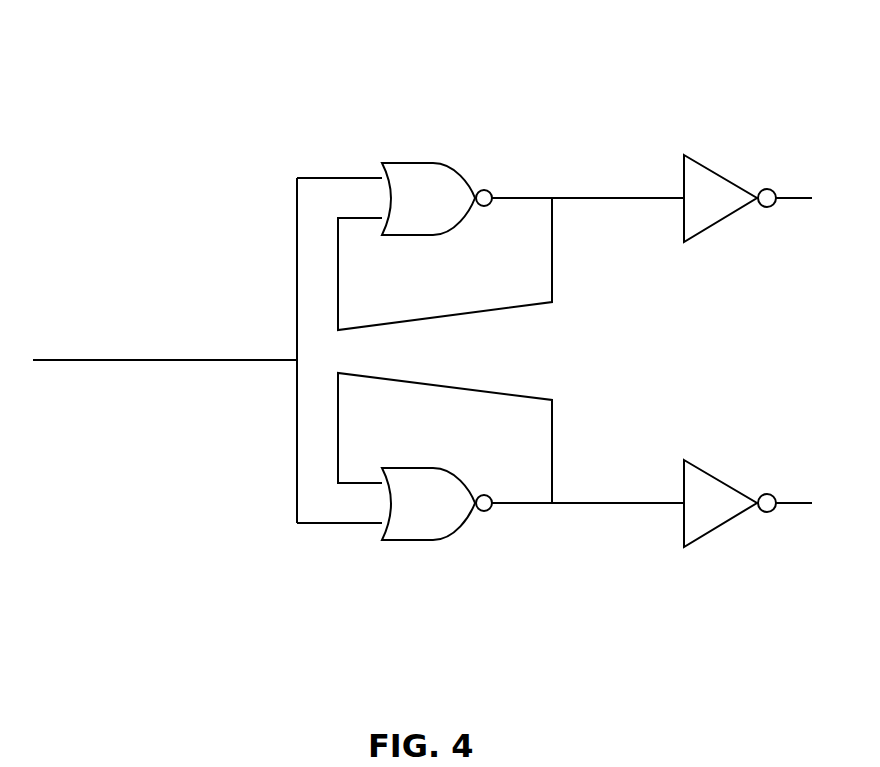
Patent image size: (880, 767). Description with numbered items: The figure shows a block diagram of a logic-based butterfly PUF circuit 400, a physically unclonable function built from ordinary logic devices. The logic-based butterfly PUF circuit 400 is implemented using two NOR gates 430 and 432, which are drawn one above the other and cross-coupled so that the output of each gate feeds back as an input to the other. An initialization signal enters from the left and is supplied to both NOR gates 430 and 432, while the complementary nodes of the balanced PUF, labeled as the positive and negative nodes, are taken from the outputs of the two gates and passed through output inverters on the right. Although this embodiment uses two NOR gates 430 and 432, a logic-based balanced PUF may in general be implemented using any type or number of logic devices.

The logic-based butterfly PUF circuit 400 is at (313, 48).
The NOR gate 430 is at (413, 162).
The NOR gate 432 is at (413, 538).